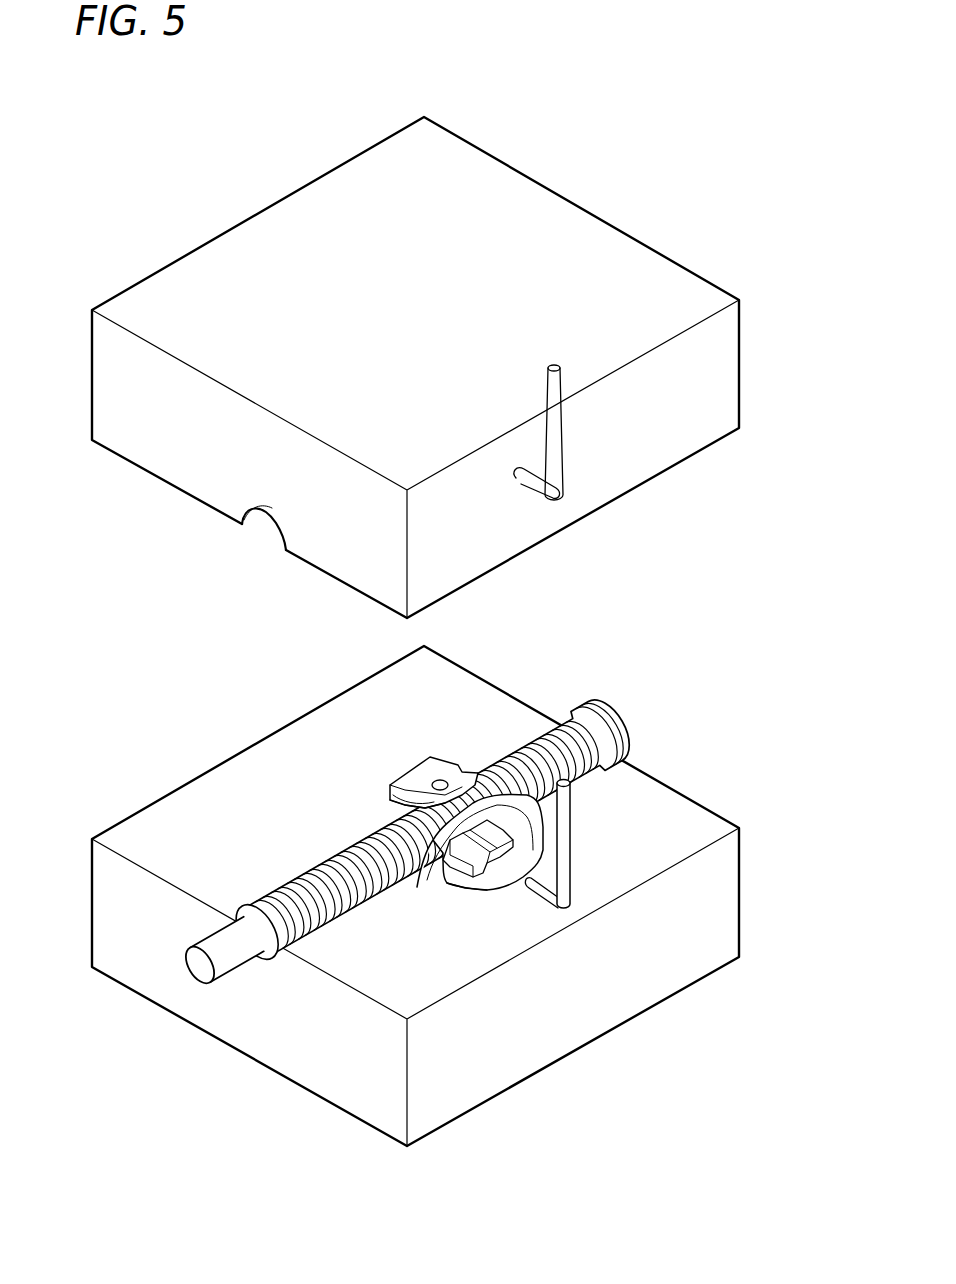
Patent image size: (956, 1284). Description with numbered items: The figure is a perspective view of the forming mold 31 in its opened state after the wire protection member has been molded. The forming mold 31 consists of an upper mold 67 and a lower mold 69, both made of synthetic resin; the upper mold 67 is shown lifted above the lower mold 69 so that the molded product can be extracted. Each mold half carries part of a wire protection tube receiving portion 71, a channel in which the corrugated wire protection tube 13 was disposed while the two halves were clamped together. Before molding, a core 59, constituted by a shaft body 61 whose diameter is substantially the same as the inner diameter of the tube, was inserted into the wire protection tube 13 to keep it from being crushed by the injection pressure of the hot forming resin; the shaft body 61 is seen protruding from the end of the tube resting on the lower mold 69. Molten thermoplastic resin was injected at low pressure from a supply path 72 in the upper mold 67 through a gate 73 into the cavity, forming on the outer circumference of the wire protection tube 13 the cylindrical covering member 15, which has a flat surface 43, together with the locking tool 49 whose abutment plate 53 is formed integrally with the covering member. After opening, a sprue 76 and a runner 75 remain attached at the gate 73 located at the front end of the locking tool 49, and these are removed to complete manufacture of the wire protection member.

The wire protection tube 13 is at (382, 887).
The cylindrical covering member 15 is at (402, 741).
The forming mold 31 is at (469, 631).
The flat surface 43 is at (388, 803).
The locking tool 49 is at (478, 906).
The abutment plate 53 is at (566, 949).
The core 59 is at (192, 980).
The shaft body 61 is at (150, 968).
The upper mold 67 is at (447, 368).
The lower mold 69 is at (742, 840).
The wire protection tube receiving portion 71 is at (278, 524).
The supply path 72 is at (554, 366).
The gate 73 is at (531, 900).
The runner 75 is at (546, 897).
The sprue 76 is at (599, 947).